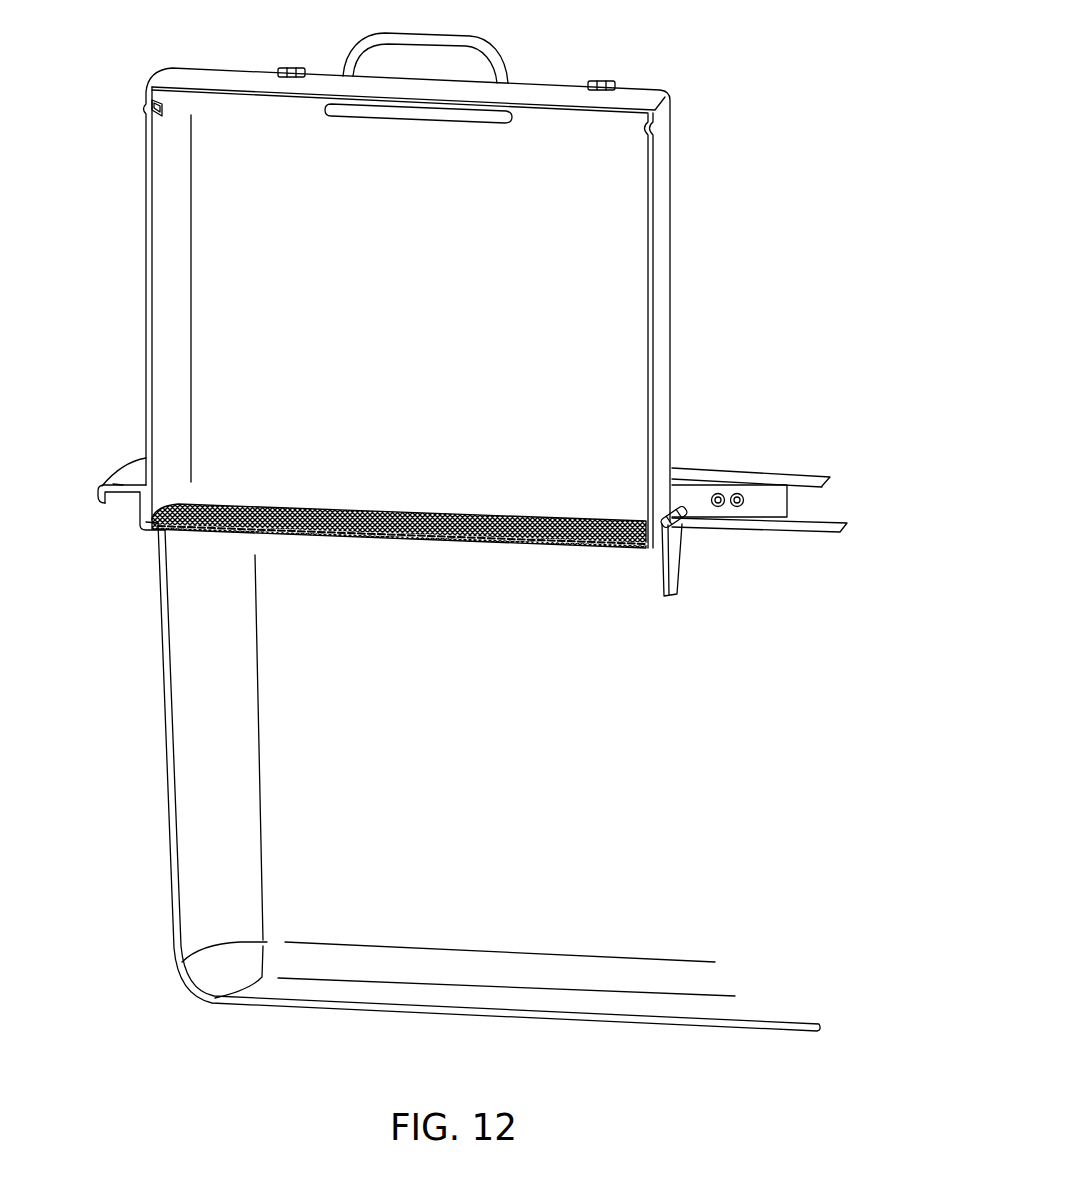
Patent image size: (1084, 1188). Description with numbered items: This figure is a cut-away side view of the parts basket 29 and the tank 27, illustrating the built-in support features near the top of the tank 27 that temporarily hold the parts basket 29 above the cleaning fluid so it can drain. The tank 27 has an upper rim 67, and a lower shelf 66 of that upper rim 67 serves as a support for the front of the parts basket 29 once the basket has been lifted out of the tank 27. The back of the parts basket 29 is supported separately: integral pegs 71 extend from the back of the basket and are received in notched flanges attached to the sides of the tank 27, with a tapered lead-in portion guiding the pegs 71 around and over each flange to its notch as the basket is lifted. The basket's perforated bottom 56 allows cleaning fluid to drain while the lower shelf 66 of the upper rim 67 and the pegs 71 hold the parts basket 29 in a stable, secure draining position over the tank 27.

The panel 29 is at (660, 275).
The lower shelf 66 is at (814, 482).
The upper rim 67 is at (133, 470).
The mesh tray 56 is at (460, 546).
The integral pegs 71 is at (686, 521).
The tank 27 is at (168, 752).